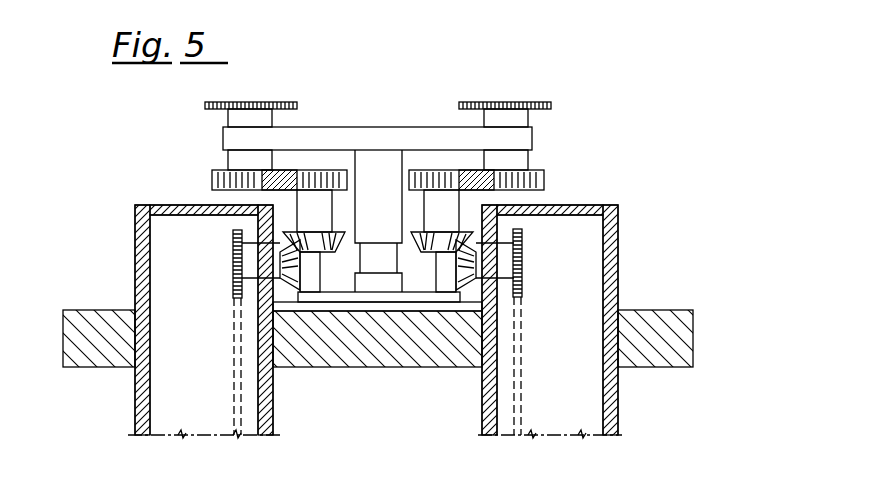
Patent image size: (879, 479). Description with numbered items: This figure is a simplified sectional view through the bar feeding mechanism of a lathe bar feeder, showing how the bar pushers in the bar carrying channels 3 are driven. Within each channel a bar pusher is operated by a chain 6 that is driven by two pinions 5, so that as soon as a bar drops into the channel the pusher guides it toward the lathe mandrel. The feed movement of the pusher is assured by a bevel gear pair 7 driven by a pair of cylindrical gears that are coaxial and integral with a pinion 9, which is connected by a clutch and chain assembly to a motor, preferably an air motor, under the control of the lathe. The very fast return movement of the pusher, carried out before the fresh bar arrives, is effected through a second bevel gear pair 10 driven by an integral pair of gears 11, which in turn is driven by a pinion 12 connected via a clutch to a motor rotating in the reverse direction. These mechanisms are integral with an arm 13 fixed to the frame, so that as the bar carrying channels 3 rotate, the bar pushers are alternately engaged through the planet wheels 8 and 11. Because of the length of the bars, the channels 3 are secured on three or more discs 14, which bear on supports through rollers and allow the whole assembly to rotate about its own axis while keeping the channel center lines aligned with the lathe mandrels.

The bar carrying channel 3 is at (140, 410).
The pinion 5 is at (235, 285).
The chain 6 is at (241, 393).
The bevel gear pair 7 is at (465, 260).
The planet wheel 8 is at (542, 180).
The pinion 9 is at (532, 115).
The second bevel gear pair 10 is at (293, 262).
The integral pair of gears 11 is at (212, 180).
The pinion 12 is at (228, 114).
The arm 13 is at (397, 133).
The disc 14 is at (683, 335).